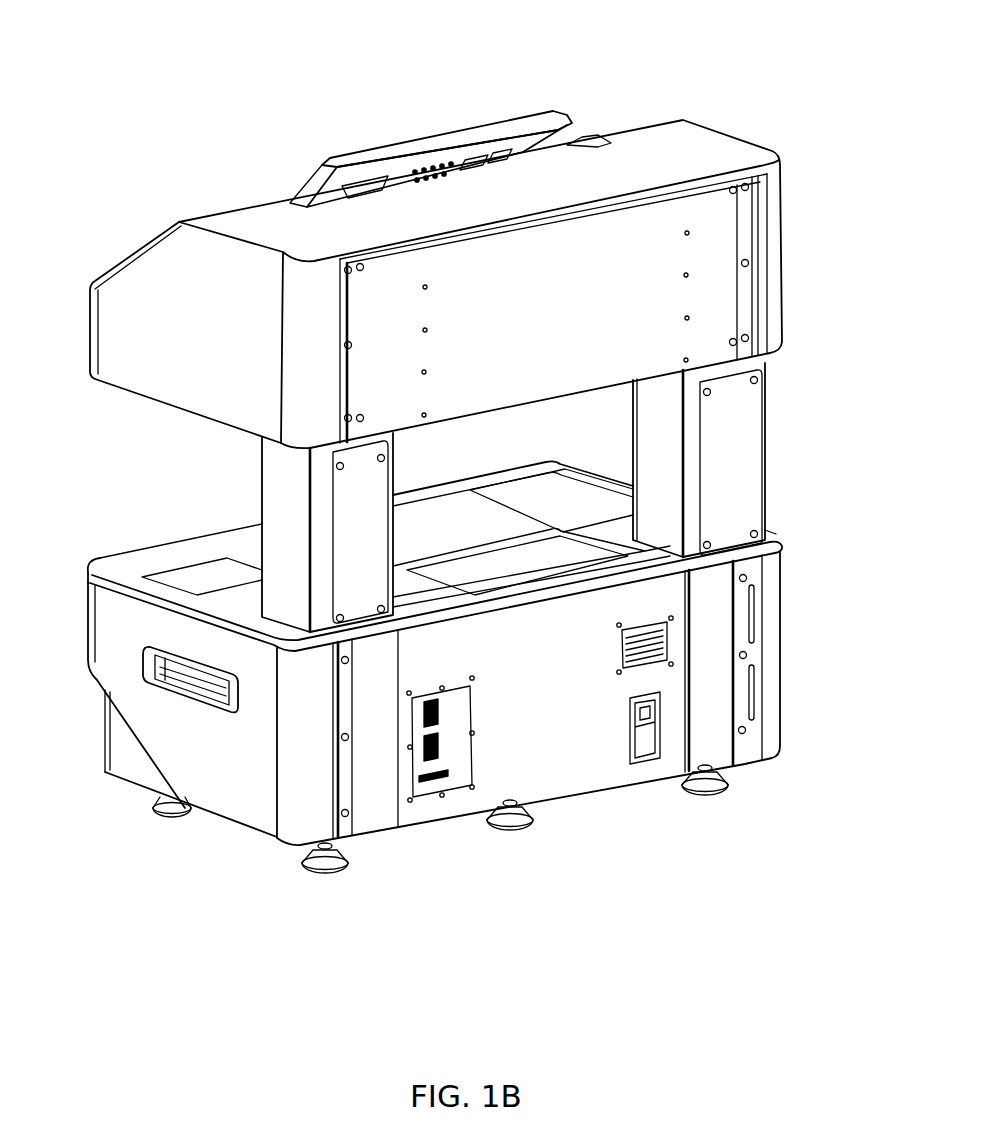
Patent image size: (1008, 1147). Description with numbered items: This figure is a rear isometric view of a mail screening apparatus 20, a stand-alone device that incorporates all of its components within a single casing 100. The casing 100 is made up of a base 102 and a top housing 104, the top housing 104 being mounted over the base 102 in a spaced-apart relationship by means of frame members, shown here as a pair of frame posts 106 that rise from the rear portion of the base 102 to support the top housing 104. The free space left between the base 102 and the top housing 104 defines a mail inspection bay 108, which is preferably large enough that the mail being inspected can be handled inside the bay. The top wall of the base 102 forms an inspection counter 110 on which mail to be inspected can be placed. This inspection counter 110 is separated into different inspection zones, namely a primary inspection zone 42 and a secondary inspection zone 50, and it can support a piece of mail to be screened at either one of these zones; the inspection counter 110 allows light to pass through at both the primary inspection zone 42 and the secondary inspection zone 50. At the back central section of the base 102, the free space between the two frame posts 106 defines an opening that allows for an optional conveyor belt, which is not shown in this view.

The mail screening apparatus 20 is at (797, 44).
The casing 100 is at (797, 121).
The base 102 is at (112, 620).
The top housing 104 is at (730, 145).
The frame posts 106 is at (272, 460).
The mail inspection bay 108 is at (200, 511).
The inspection counter 110 is at (119, 562).
The primary inspection zone 42 is at (463, 537).
The secondary inspection zone 50 is at (224, 589).